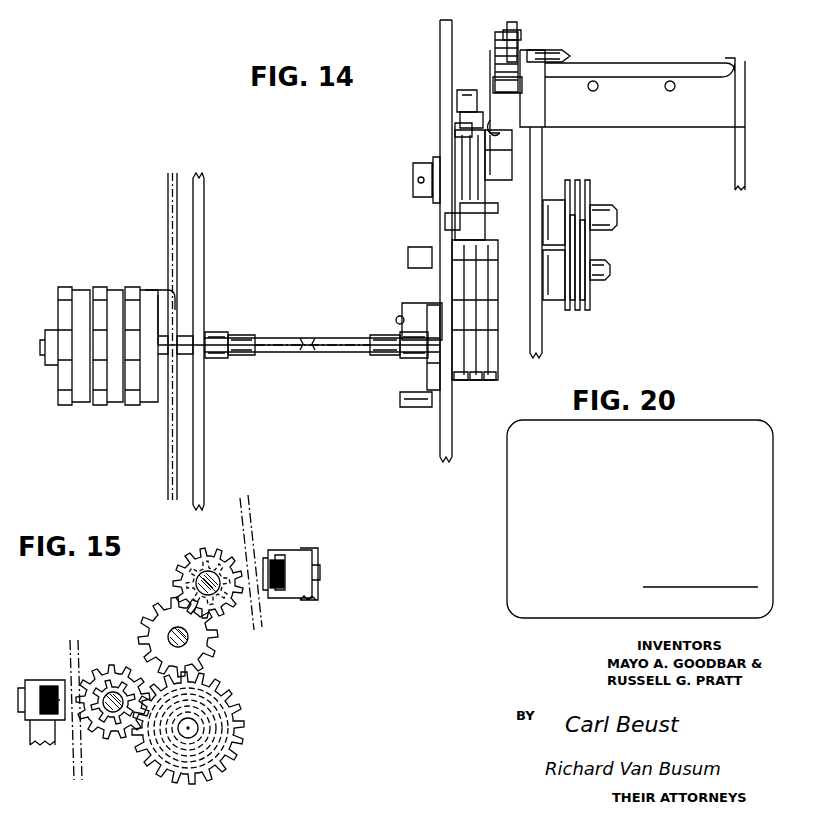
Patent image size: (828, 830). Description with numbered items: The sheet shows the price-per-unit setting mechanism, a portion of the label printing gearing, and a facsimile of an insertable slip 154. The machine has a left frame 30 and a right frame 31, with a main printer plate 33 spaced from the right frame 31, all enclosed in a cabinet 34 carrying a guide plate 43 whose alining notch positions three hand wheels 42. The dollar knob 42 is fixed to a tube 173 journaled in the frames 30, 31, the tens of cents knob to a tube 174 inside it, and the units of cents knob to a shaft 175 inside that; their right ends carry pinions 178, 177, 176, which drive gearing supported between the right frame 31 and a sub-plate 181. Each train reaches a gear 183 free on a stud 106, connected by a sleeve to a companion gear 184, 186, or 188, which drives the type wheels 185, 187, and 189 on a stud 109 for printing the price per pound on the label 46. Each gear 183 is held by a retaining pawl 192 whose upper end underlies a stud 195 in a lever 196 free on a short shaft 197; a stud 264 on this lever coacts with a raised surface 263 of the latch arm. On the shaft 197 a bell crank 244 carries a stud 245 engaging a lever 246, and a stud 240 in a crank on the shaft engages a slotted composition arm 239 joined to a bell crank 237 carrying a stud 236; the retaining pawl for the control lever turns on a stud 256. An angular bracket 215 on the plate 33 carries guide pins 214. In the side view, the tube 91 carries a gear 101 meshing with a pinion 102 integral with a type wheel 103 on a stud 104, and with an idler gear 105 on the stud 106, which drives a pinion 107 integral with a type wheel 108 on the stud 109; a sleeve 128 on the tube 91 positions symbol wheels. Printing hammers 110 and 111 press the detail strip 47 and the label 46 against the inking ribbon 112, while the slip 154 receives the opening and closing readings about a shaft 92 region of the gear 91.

In FIG. 14, the left frame 30 is at (204, 248).
In FIG. 14, the right frame 31 is at (440, 33).
In FIG. 14, the main printer plate 33 is at (540, 350).
In FIG. 14, the cabinet 34 is at (176, 185).
In FIG. 14, the hand wheels 42 is at (64, 290).
In FIG. 14, the guide plate 43 is at (160, 293).
In FIG. 15, the label 46 is at (247, 503).
In FIG. 15, the detail strip 47 is at (66, 642).
In FIG. 15, the tube 91 is at (234, 698).
In FIG. 15, the shaft 92 is at (198, 722).
In FIG. 15, the gear 101 is at (240, 740).
In FIG. 15, the pinion 102 is at (118, 735).
In FIG. 15, the type wheel 103 is at (98, 680).
In FIG. 15, the stud 104 is at (116, 690).
In FIG. 15, the idler gear 105 is at (210, 655).
In FIG. 14, the stud 106 is at (600, 262).
In FIG. 15, the stud 106 is at (188, 637).
In FIG. 15, the pinion 107 is at (184, 570).
In FIG. 15, the type wheel 108 is at (190, 550).
In FIG. 14, the stud 109 is at (603, 205).
In FIG. 15, the stud 109 is at (196, 580).
In FIG. 15, the printing hammer 110 is at (36, 680).
In FIG. 15, the printing hammer 111 is at (296, 550).
In FIG. 15, the inking ribbon 112 is at (76, 642).
In FIG. 15, the sleeve 128 is at (160, 760).
In FIG. 20, the slip 154 is at (750, 428).
In FIG. 14, the tube 173 is at (213, 342).
In FIG. 14, the tube 174 is at (244, 340).
In FIG. 14, the shaft 175 is at (285, 340).
In FIG. 14, the pinion 176 is at (460, 380).
In FIG. 14, the pinion 177 is at (476, 380).
In FIG. 14, the pinion 178 is at (488, 380).
In FIG. 14, the sub-plate 181 is at (495, 232).
In FIG. 14, the gear 183 is at (455, 282).
In FIG. 14, the companion gear 184 is at (582, 292).
In FIG. 14, the type wheel 185 is at (589, 182).
In FIG. 14, the companion gear 186 is at (578, 304).
In FIG. 14, the type wheel 187 is at (577, 182).
In FIG. 14, the gear 188 is at (568, 304).
In FIG. 14, the type wheel 189 is at (567, 182).
In FIG. 14, the retaining pawl 192 is at (460, 262).
In FIG. 14, the stud 195 is at (455, 210).
In FIG. 14, the lever 196 is at (455, 129).
In FIG. 14, the short shaft 197 is at (490, 193).
In FIG. 14, the guide pins 214 is at (593, 81).
In FIG. 14, the angular bracket 215 is at (641, 118).
In FIG. 14, the stud 236 is at (553, 50).
In FIG. 14, the bell crank 237 is at (513, 24).
In FIG. 14, the composition arm 239 is at (490, 55).
In FIG. 14, the stud 240 is at (498, 128).
In FIG. 14, the bell crank 244 is at (413, 177).
In FIG. 14, the stud 245 is at (398, 318).
In FIG. 14, the lever 246 is at (427, 378).
In FIG. 14, the stud 256 is at (414, 407).
In FIG. 14, the raised surface 263 is at (460, 111).
In FIG. 14, the stud 264 is at (456, 93).